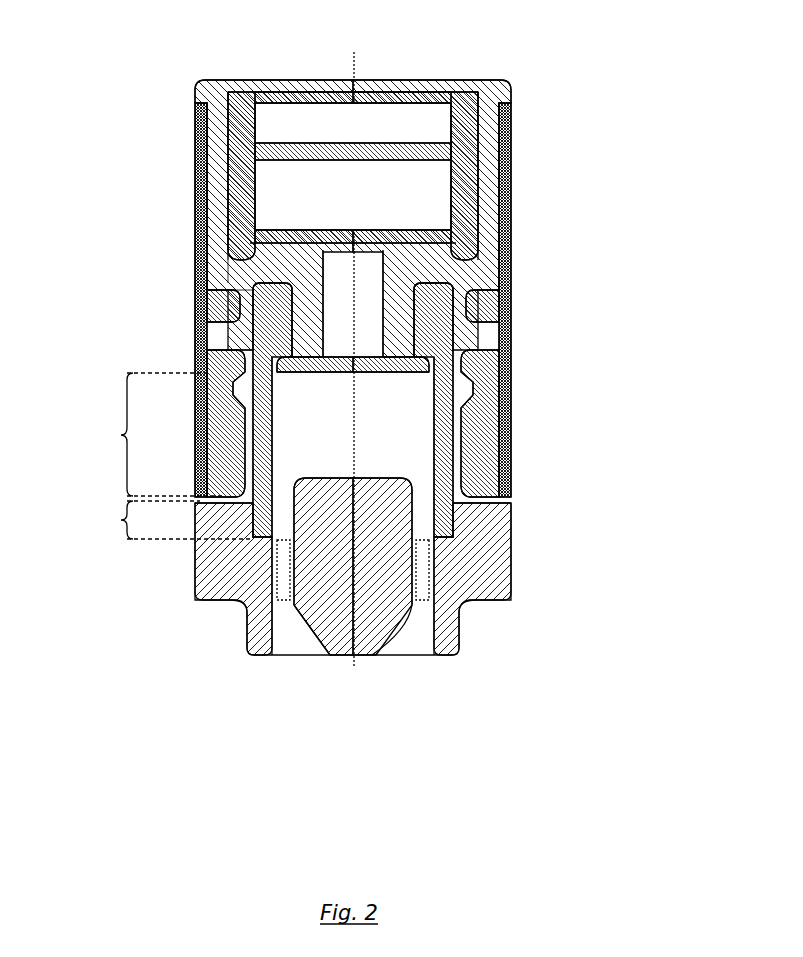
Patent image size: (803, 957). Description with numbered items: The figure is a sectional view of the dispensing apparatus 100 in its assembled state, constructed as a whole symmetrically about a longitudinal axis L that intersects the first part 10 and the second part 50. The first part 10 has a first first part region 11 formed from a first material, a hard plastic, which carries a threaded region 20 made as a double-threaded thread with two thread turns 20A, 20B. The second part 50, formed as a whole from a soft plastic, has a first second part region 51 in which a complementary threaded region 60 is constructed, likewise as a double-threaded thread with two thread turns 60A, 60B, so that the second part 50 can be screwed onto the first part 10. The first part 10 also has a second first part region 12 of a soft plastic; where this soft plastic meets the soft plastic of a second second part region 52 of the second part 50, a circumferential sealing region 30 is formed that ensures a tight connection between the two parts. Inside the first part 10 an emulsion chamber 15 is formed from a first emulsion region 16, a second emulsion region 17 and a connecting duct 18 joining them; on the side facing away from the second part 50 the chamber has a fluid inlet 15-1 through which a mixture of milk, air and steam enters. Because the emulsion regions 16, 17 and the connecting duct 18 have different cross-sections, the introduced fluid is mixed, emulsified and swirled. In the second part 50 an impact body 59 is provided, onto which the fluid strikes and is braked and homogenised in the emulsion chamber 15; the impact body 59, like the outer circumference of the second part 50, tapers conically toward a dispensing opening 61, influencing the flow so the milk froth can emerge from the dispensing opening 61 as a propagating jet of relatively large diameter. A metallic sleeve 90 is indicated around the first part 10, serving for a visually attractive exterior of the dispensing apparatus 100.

The first part 10 is at (432, 190).
The first first part region 11 is at (353, 190).
The second first part region 12 is at (443, 518).
The emulsion chamber 15 is at (463, 176).
The fluid inlet 15-1 is at (297, 72).
The first emulsion region 16 is at (423, 210).
The second emulsion region 17 is at (405, 378).
The connecting duct 18 is at (370, 294).
The threaded region 20 is at (397, 374).
The thread turn 20A is at (494, 416).
The thread turn 20B is at (196, 415).
The circumferential sealing region 30 is at (167, 520).
The second part 50 is at (227, 578).
The first second part region 51 is at (154, 434).
The second second part region 52 is at (456, 537).
The impact body 59 is at (373, 630).
The threaded region 60 is at (397, 424).
The thread turn 60A is at (496, 426).
The thread turn 60B is at (196, 430).
The dispensing opening 61 is at (338, 626).
The sleeve 90 is at (197, 222).
The dispensing apparatus 100 is at (542, 773).
The longitudinal axis L is at (362, 62).